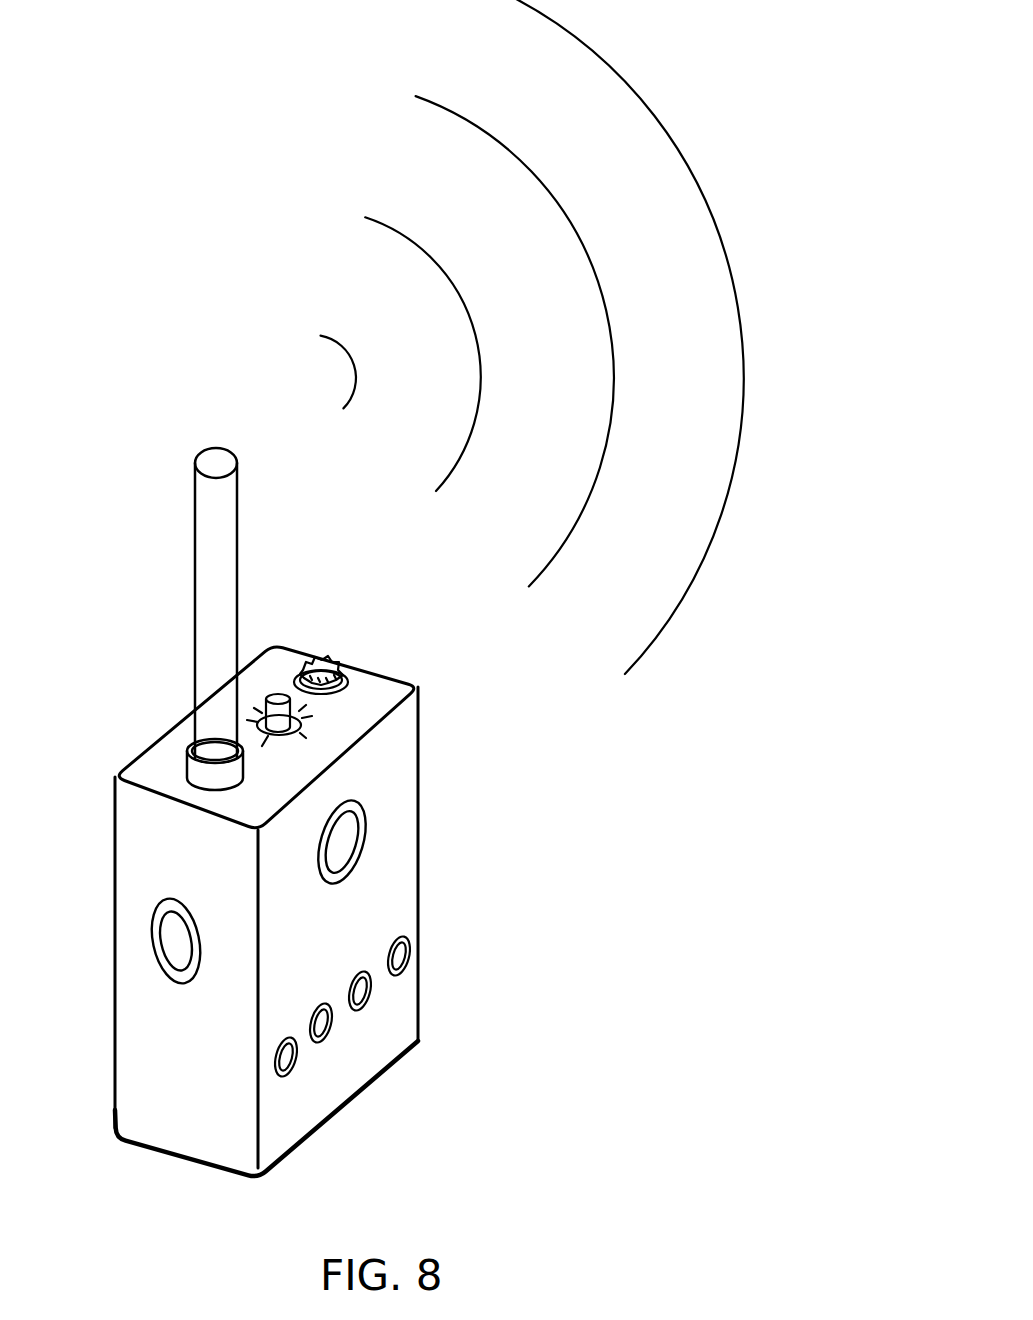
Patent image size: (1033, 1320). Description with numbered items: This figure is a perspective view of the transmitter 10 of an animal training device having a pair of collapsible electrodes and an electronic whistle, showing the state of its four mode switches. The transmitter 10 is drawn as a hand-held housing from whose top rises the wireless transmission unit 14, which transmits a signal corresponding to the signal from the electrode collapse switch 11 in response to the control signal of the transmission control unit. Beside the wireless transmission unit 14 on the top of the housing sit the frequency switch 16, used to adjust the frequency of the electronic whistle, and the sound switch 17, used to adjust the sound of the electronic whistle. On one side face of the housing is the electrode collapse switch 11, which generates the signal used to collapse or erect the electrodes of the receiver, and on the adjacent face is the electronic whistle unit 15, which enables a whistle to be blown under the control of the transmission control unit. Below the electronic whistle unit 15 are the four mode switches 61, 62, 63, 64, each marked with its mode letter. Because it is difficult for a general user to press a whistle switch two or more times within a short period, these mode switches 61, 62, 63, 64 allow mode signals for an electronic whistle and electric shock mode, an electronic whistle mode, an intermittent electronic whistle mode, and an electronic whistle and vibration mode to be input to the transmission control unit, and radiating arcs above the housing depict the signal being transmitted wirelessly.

The transmitter 10 is at (455, 1085).
The electrode collapse switch 11 is at (175, 942).
The wireless transmission unit 14 is at (214, 463).
The electronic whistle unit 15 is at (345, 843).
The frequency switch 16 is at (274, 695).
The sound switch 17 is at (321, 670).
The mode switch 61 is at (286, 1057).
The mode switch 62 is at (321, 1023).
The mode switch 63 is at (360, 991).
The mode switch 64 is at (399, 956).